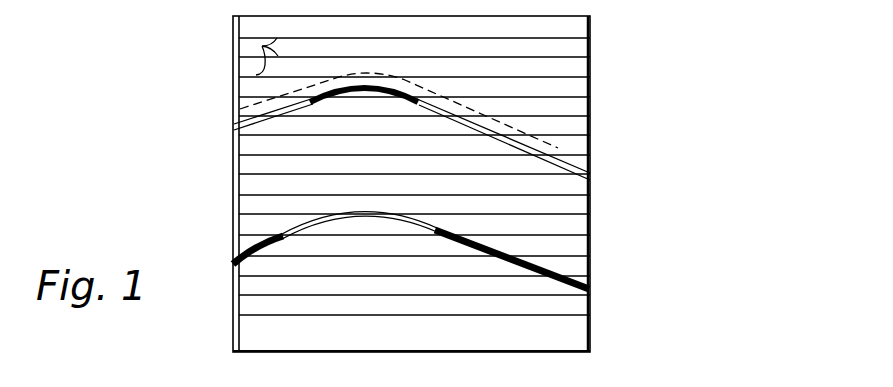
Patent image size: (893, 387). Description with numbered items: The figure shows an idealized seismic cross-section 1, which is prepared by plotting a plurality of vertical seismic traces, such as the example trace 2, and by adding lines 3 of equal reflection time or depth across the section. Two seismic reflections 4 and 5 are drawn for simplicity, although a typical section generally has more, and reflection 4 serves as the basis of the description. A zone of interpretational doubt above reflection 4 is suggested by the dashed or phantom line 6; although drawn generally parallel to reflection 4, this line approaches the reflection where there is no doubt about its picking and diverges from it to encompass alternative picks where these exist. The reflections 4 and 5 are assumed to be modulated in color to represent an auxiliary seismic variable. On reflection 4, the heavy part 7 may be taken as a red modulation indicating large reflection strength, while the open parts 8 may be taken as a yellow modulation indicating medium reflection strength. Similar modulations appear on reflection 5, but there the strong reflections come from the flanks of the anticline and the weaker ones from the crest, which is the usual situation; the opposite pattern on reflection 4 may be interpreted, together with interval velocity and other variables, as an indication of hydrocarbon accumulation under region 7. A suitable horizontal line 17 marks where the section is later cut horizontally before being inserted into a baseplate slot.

The seismic cross-section 1 is at (575, 69).
The vertical seismic trace 2 is at (233, 203).
The lines of equal reflection time or depth 3 is at (262, 46).
The seismic reflection 4 is at (577, 173).
The seismic reflection 5 is at (560, 273).
The dashed or phantom line 6 is at (558, 148).
The heavy part of reflection 7 is at (406, 102).
The open parts of reflection 8 is at (258, 124).
The horizontal line 17 is at (570, 238).